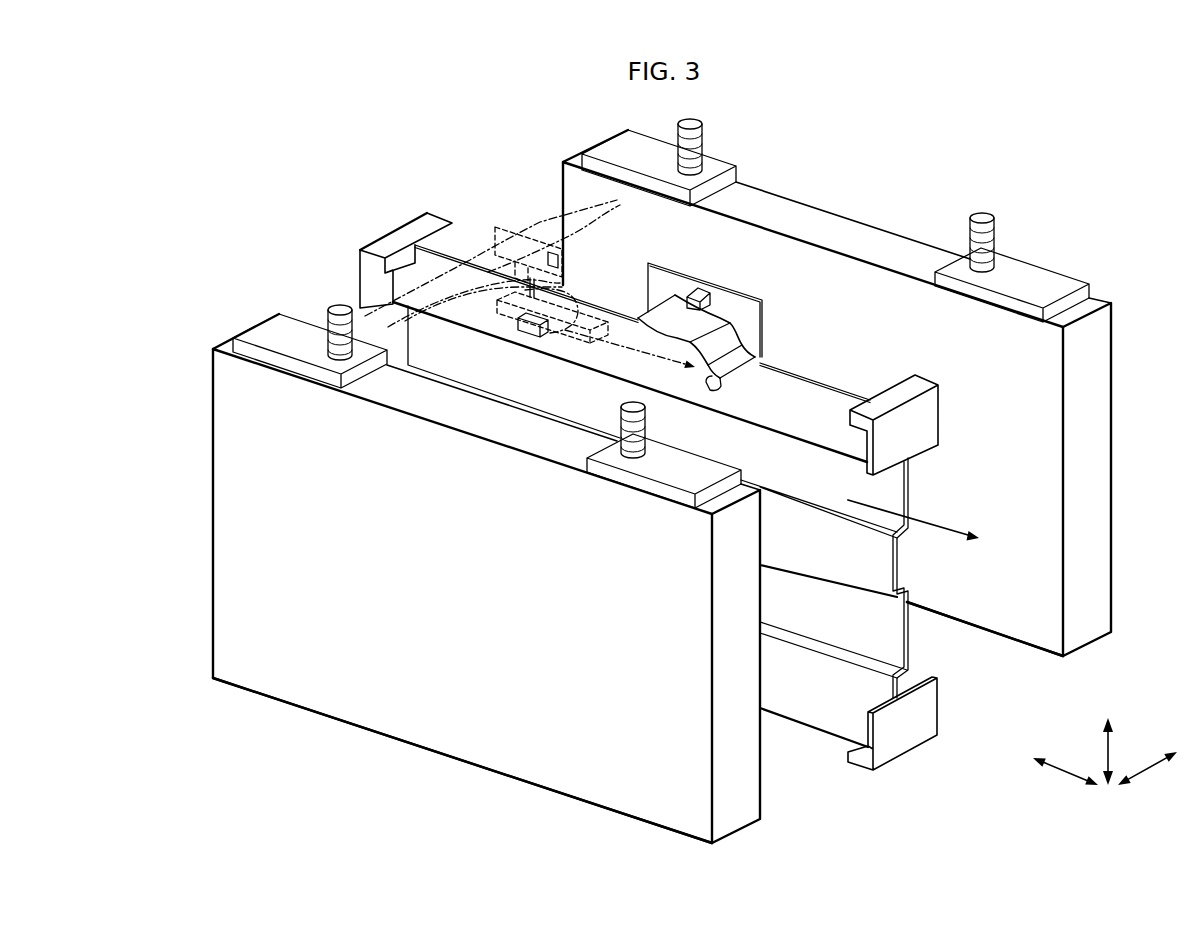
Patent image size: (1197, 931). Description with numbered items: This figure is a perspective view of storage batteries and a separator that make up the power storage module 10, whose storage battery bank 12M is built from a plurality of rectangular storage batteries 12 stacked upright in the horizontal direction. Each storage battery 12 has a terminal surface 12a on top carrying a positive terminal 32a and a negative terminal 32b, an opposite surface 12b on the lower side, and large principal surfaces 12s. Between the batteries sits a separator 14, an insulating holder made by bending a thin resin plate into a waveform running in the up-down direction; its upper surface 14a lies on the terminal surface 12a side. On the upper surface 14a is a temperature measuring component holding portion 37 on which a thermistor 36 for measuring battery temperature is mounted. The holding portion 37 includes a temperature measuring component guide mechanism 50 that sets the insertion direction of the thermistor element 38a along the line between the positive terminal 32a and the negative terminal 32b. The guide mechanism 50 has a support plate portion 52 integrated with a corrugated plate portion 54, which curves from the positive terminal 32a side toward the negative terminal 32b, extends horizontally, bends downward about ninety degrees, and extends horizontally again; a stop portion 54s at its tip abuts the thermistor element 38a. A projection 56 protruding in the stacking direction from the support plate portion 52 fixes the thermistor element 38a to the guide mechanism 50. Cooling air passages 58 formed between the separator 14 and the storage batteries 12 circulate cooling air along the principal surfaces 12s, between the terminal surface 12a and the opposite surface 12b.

The power storage module 10 is at (691, 472).
The storage battery bank 12M is at (691, 472).
The storage battery 12 is at (868, 220).
The terminal surface 12a is at (803, 208).
The surface on the opposite side 12b is at (471, 762).
The principal surface 12s is at (363, 712).
The separator 14 is at (857, 768).
The upper surface of separator 14a is at (845, 400).
The positive terminal 32a is at (338, 360).
The negative terminal 32b is at (702, 125).
The thermistor 36 is at (547, 192).
The temperature measuring component holding portion 37 is at (775, 325).
The thermistor element 38a is at (498, 337).
The temperature measuring component guide mechanism 50 is at (677, 305).
The support plate portion 52 is at (752, 303).
The corrugated plate portion 54 is at (667, 332).
The stop portion 54s is at (717, 392).
The projection 56 is at (700, 290).
The cooling air passage 58 is at (885, 497).